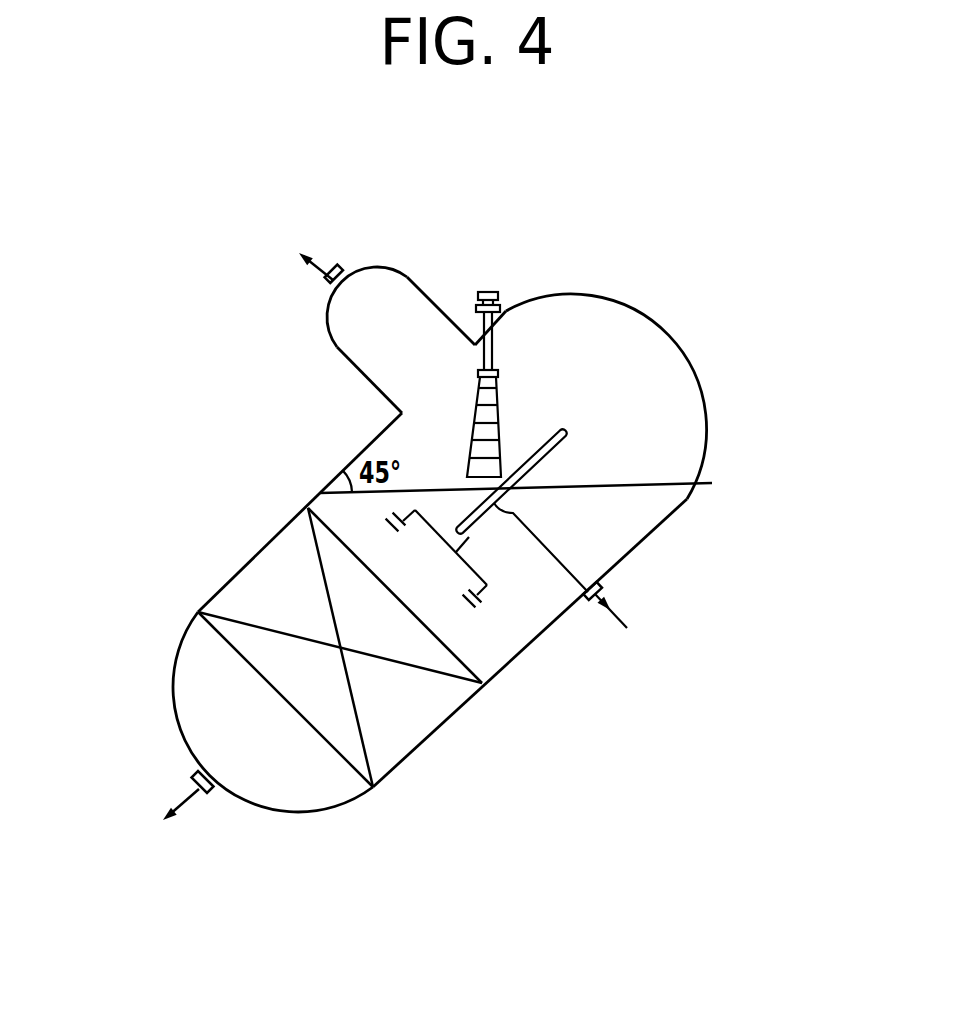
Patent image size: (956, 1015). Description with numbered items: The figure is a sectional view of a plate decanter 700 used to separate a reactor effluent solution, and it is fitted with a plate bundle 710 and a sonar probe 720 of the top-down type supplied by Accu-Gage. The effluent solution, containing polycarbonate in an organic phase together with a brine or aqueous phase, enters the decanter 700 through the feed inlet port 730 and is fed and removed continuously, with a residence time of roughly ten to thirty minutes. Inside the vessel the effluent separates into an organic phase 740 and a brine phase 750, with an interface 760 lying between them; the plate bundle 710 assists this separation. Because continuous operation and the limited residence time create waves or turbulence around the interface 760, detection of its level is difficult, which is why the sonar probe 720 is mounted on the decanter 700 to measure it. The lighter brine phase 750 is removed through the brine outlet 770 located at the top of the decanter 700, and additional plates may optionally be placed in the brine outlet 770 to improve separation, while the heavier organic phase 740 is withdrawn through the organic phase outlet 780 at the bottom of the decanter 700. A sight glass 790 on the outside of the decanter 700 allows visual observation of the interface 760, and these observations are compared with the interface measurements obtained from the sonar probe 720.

The decanter 700 is at (415, 492).
The plate bundle 710 is at (420, 668).
The sonar probe 720 is at (494, 283).
The feed inlet port 730 is at (589, 585).
The organic phase 740 is at (232, 698).
The brine phase 750 is at (614, 368).
The interface 760 is at (729, 482).
The brine outlet 770 is at (305, 247).
The organic phase outlet 780 is at (171, 815).
The sight glass 790 is at (503, 487).